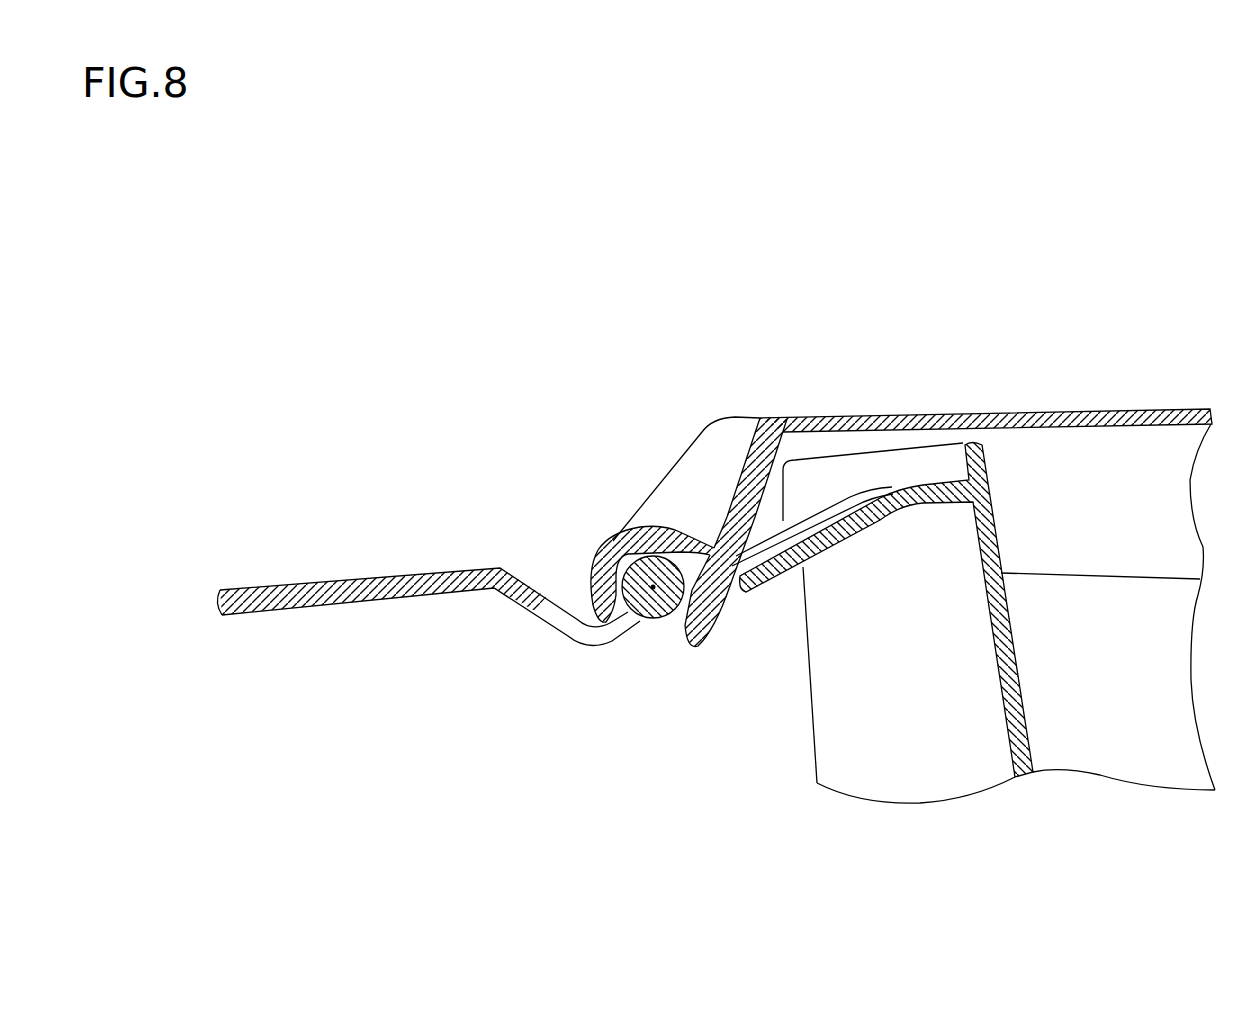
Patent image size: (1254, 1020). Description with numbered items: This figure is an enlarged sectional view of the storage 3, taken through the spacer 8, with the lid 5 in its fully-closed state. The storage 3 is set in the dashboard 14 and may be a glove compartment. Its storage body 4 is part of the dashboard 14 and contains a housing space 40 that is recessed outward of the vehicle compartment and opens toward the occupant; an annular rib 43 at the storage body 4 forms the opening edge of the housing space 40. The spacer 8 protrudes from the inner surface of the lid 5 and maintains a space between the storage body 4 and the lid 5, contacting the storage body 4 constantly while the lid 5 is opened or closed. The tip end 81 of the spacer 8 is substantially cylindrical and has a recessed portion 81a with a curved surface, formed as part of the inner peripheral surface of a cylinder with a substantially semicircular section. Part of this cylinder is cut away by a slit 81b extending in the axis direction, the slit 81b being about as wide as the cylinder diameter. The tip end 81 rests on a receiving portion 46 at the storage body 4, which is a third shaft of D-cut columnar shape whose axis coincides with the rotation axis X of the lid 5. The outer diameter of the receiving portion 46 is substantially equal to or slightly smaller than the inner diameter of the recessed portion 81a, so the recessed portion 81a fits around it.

The storage 3 is at (973, 539).
The lid 5 is at (828, 410).
The rib 43 is at (914, 447).
The storage body 4 is at (1000, 533).
The housing space 40 is at (1137, 721).
The spacer 8 is at (642, 593).
The tip end 81 is at (727, 603).
The recessed portion 81a is at (612, 544).
The slit 81b is at (677, 632).
The receiving portion 46 is at (660, 622).
The dashboard 14 is at (347, 580).
The rotation axis X is at (607, 640).